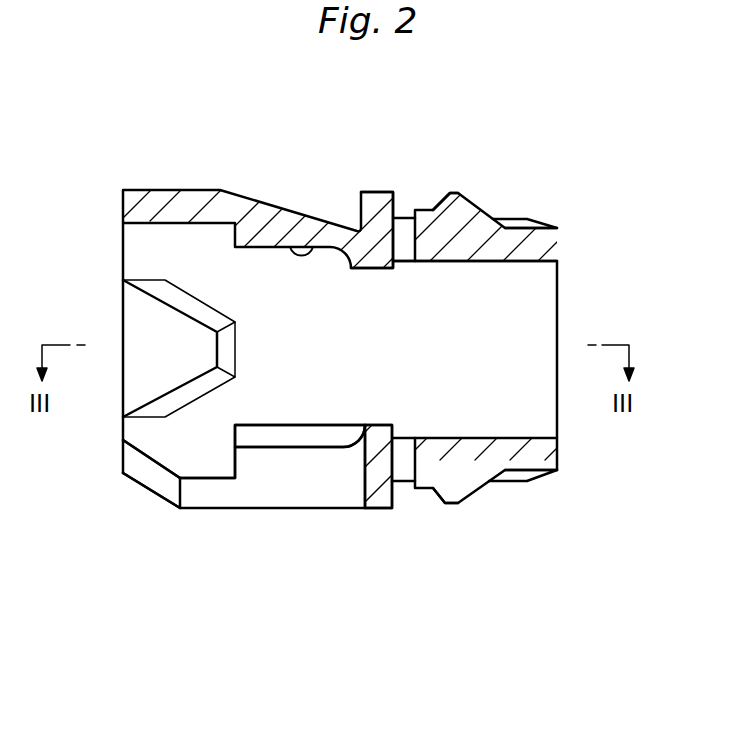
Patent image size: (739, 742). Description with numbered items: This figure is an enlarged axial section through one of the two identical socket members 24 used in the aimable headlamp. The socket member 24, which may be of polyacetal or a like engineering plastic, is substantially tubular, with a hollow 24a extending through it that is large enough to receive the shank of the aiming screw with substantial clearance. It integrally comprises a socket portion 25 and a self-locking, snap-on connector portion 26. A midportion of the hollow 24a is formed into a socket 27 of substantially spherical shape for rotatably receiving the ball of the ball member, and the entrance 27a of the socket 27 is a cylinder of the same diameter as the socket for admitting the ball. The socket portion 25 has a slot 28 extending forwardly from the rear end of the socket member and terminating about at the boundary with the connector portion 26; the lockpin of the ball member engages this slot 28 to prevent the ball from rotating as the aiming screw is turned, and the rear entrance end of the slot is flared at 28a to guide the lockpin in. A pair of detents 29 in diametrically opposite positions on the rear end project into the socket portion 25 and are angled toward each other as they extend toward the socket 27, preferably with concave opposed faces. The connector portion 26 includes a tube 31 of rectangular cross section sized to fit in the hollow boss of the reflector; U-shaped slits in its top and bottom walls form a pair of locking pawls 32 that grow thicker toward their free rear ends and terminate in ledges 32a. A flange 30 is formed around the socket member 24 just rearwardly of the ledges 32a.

The socket member 24 is at (124, 188).
The hollow 24a is at (510, 263).
The socket portion 25 is at (190, 189).
The connector portion 26 is at (527, 219).
The socket 27 is at (338, 228).
The entrance 27a is at (237, 257).
The slot 28 is at (283, 488).
The flared entrance end portion 28a is at (142, 486).
The detents 29 is at (197, 350).
The flange 30 is at (372, 510).
The tube 31 is at (520, 481).
The locking pawls 32 is at (458, 196).
The ledges 32a is at (432, 197).